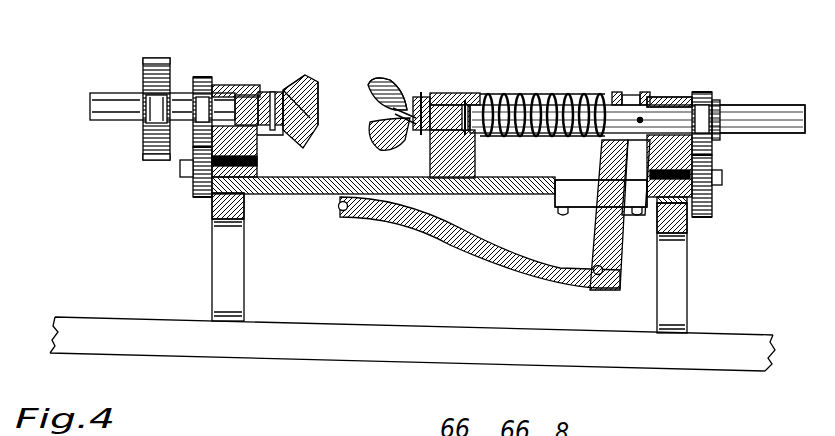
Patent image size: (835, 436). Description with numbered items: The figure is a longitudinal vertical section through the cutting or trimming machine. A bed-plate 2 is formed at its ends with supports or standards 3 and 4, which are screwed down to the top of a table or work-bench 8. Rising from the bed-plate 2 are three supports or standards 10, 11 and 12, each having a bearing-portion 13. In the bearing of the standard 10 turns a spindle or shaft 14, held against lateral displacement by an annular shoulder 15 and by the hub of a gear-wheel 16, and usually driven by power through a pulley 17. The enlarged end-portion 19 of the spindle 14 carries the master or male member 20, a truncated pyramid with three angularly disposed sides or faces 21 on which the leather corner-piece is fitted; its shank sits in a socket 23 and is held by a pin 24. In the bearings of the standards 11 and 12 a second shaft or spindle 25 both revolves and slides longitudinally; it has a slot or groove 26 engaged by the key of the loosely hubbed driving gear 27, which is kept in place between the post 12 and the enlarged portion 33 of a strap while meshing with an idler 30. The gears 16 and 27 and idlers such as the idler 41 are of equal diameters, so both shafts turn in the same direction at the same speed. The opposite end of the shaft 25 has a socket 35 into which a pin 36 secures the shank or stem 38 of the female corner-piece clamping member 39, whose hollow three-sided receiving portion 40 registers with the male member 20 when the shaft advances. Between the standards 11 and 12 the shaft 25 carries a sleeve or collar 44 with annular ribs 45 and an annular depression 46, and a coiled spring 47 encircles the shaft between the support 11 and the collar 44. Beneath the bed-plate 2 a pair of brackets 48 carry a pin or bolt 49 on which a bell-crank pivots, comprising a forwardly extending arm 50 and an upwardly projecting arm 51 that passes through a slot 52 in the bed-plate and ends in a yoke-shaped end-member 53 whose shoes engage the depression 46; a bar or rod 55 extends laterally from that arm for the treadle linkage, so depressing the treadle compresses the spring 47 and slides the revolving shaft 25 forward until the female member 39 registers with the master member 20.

The bed-plate 2 is at (345, 182).
The support or standard 3 is at (213, 268).
The support or standard 4 is at (690, 282).
The table or work-bench 8 is at (317, 352).
The support or standard 10 is at (250, 145).
The support or standard 11 is at (476, 162).
The support or standard 12 is at (712, 155).
The bearing-portion 13 is at (225, 90).
The spindle or shaft 14 is at (100, 93).
The annular shoulder 15 is at (258, 92).
The gear-wheel 16 is at (203, 80).
The pulley 17 is at (157, 62).
The enlarged end-portion 19 is at (271, 123).
The master or male member 20 is at (312, 80).
The angularly disposed sides or faces 21 is at (320, 93).
The socket 23 is at (290, 85).
The pin 24 is at (273, 95).
The shaft or spindle 25 is at (565, 100).
The slot or groove 26 is at (785, 110).
The driving gear 27 is at (710, 92).
The idler 30 is at (712, 197).
The enlarged portion 33 is at (722, 98).
The socket or receiving portion 35 is at (418, 95).
The pin 36 is at (458, 95).
The shank or stem 38 is at (393, 135).
The female corner-piece clamping member 39 is at (388, 78).
The hollow three-sided receiving portion 40 is at (372, 110).
The idler 41 is at (196, 190).
The sleeve or collar 44 is at (660, 92).
The annular ribs 45 is at (616, 92).
The annular depression 46 is at (630, 95).
The coiled spring 47 is at (500, 88).
The brackets 48 is at (583, 220).
The pin or bolt 49 is at (598, 275).
The forwardly extending arm or member 50 is at (470, 243).
The upwardly projecting arm or member 51 is at (620, 170).
The slot or elongated opening 52 is at (565, 195).
The yoke-shaped or bifurcated end-member 53 is at (612, 152).
The bar or rod 55 is at (343, 211).